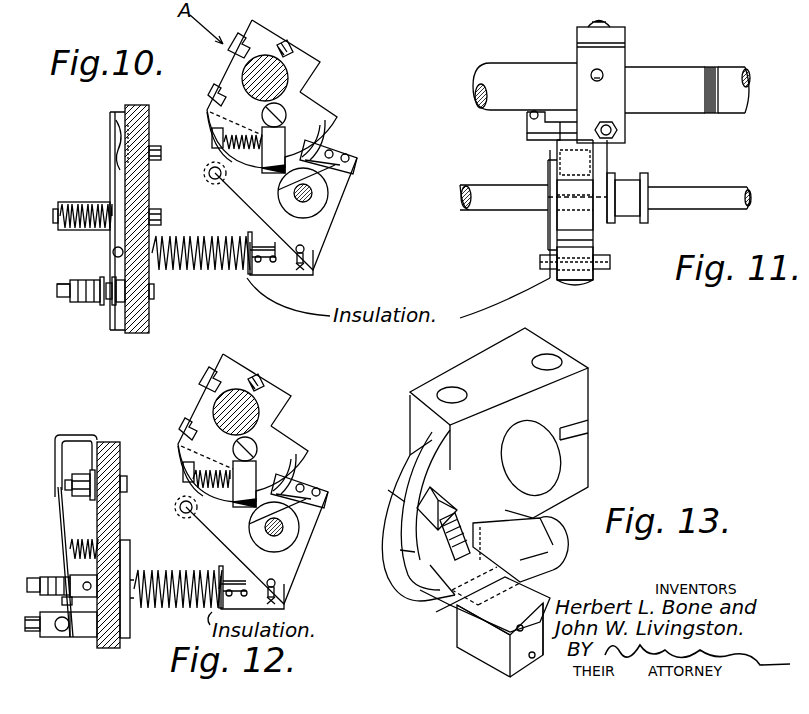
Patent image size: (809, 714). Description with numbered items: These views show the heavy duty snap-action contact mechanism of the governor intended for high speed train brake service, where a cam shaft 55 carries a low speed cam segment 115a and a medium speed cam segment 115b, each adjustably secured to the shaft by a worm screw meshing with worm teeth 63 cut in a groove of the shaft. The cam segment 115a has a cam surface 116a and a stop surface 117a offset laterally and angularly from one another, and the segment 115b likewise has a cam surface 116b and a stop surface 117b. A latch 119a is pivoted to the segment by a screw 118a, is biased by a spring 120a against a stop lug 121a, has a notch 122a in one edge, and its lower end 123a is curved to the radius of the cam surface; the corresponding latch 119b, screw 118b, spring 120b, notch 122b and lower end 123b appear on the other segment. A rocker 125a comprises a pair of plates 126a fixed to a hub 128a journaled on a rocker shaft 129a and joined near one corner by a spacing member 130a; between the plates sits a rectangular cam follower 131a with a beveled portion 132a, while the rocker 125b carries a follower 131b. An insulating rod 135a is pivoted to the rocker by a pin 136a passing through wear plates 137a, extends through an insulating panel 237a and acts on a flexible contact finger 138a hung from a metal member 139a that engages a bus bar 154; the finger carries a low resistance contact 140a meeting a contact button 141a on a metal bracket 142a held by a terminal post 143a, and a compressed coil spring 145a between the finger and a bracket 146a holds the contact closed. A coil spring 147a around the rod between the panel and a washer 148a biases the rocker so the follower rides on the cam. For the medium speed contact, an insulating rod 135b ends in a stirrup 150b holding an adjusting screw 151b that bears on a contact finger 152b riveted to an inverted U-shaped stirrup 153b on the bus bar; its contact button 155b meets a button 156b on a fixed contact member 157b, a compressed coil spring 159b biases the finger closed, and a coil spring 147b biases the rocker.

In FIG. 10, the cam shaft 55 is at (286, 72).
In FIG. 11, the cam shaft 55 is at (527, 63).
In FIG. 12, the cam shaft 55 is at (258, 405).
In FIG. 11, the worm teeth 63 is at (712, 68).
In FIG. 10, the low speed cam segment 115a is at (272, 33).
In FIG. 11, the low speed cam segment 115a is at (625, 33).
In FIG. 13, the low speed cam segment 115a is at (588, 366).
In FIG. 12, the medium speed cam segment 115b is at (238, 366).
In FIG. 10, the cam surface 116a is at (230, 162).
In FIG. 13, the cam surface 116a is at (393, 568).
In FIG. 12, the cam surface 116b is at (232, 507).
In FIG. 10, the stop surface 117a is at (340, 148).
In FIG. 13, the stop surface 117a is at (548, 622).
In FIG. 12, the stop surface 117b is at (301, 473).
In FIG. 10, the screw 118a is at (303, 94).
In FIG. 11, the screw 118a is at (530, 115).
In FIG. 13, the screw 118a is at (556, 553).
In FIG. 12, the screw 118b is at (273, 437).
In FIG. 10, the latch 119a is at (213, 118).
In FIG. 13, the latch 119a is at (433, 598).
In FIG. 12, the latch 119b is at (232, 462).
In FIG. 10, the spring 120a is at (250, 155).
In FIG. 13, the spring 120a is at (468, 520).
In FIG. 12, the spring 120b is at (179, 507).
In FIG. 10, the stop lug 121a is at (330, 113).
In FIG. 11, the stop lug 121a is at (548, 130).
In FIG. 13, the stop lug 121a is at (545, 592).
In FIG. 10, the notch 122a is at (337, 183).
In FIG. 13, the notch 122a is at (456, 621).
In FIG. 12, the notch 122b is at (300, 507).
In FIG. 10, the lower end of latch 123a is at (328, 124).
In FIG. 13, the lower end of latch 123a is at (440, 622).
In FIG. 12, the lower end of latch 123b is at (238, 506).
In FIG. 10, the rocker 125a is at (336, 225).
In FIG. 11, the rocker 125a is at (606, 172).
In FIG. 12, the rocker 125b is at (300, 562).
In FIG. 11, the plates 126a is at (555, 235).
In FIG. 11, the hub 128a is at (565, 217).
In FIG. 10, the rocker shaft 129a is at (240, 242).
In FIG. 11, the rocker shaft 129a is at (712, 200).
In FIG. 12, the rocker shaft 129a is at (284, 528).
In FIG. 10, the spacing member 130a is at (209, 172).
In FIG. 10, the cam follower 131a is at (350, 193).
In FIG. 13, the cam follower 131a is at (465, 651).
In FIG. 12, the cam follower 131b is at (316, 493).
In FIG. 10, the beveled portion 132a is at (346, 165).
In FIG. 13, the beveled portion 132a is at (445, 576).
In FIG. 10, the insulating rod 135a is at (113, 255).
In FIG. 11, the insulating rod 135a is at (590, 250).
In FIG. 12, the insulating rod 135b is at (165, 609).
In FIG. 10, the pin 136a is at (312, 258).
In FIG. 11, the pin 136a is at (612, 263).
In FIG. 10, the wear plates 137a is at (278, 274).
In FIG. 11, the wear plates 137a is at (575, 282).
In FIG. 10, the flexible contact finger 138a is at (112, 172).
In FIG. 10, the metal member 139a is at (128, 142).
In FIG. 10, the low resistance contact 140a is at (105, 298).
In FIG. 10, the contact button 141a is at (112, 300).
In FIG. 10, the metal bracket 142a is at (122, 302).
In FIG. 10, the terminal post 143a is at (57, 291).
In FIG. 10, the compressed coil spring 145a is at (80, 230).
In FIG. 10, the bracket 146a is at (58, 210).
In FIG. 10, the coil spring 147a is at (207, 272).
In FIG. 12, the coil spring 147b is at (165, 578).
In FIG. 10, the washer 148a is at (280, 248).
In FIG. 12, the stirrup 150b is at (62, 597).
In FIG. 12, the adjusting screw 151b is at (46, 584).
In FIG. 12, the contact finger 152b is at (62, 502).
In FIG. 12, the inverted U-shaped stirrup 153b is at (75, 440).
In FIG. 10, the bus bar 154 is at (128, 140).
In FIG. 12, the bus bar 154 is at (121, 470).
In FIG. 12, the low resistance contact button 155b is at (70, 638).
In FIG. 12, the low resistance contact button 156b is at (50, 637).
In FIG. 12, the fixed contact member 157b is at (45, 637).
In FIG. 12, the compressed coil spring 159b is at (70, 548).
In FIG. 10, the insulating panel 237a is at (133, 106).
In FIG. 12, the insulating panel 237a is at (113, 442).